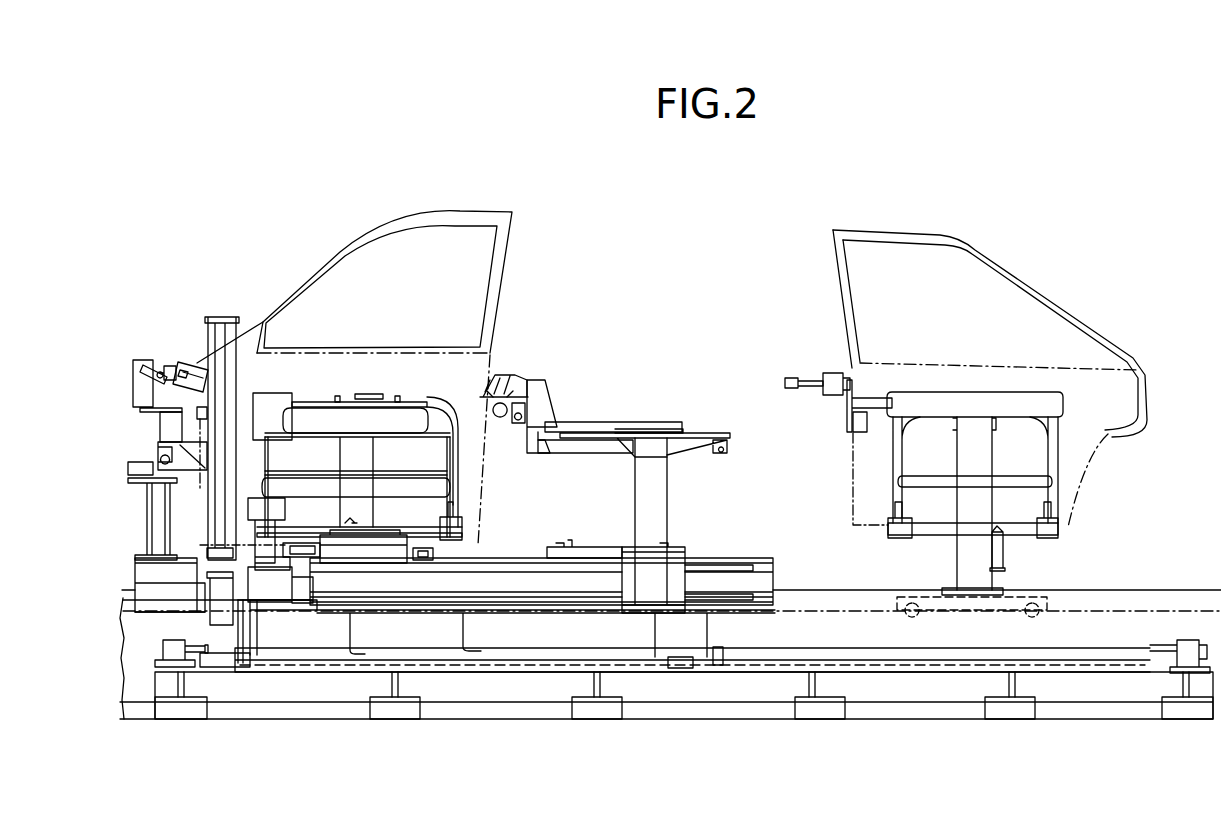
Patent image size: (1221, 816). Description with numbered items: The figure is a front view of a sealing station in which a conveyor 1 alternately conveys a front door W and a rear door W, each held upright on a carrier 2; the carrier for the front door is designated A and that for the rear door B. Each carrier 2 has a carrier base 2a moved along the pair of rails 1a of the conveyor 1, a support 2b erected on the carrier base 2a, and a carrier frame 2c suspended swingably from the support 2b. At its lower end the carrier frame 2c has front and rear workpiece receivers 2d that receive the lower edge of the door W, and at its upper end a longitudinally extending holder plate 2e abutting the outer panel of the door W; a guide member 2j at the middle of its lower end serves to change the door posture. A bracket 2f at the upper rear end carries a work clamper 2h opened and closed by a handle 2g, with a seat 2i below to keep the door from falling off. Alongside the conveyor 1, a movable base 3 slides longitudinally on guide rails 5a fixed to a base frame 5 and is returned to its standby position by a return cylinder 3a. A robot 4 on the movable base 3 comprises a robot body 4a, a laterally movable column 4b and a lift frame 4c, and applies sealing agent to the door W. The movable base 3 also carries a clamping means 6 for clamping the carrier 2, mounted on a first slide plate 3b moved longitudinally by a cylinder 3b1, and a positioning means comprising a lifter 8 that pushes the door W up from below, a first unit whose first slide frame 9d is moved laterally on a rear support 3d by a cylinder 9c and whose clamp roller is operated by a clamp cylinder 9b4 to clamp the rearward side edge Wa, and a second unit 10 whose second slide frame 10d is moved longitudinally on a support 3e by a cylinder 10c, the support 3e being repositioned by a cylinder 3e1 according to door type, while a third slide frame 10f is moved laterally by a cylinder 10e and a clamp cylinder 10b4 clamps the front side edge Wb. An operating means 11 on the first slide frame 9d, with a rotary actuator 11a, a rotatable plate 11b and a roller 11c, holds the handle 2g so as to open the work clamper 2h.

The conveyor 1 is at (817, 585).
The rail 1a is at (1145, 602).
The carrier 2 is at (412, 394).
The carrier base 2a is at (930, 597).
The support 2b is at (365, 460).
The carrier frame 2c is at (456, 447).
The workpiece receiver 2d is at (462, 527).
The holder plate 2e is at (388, 417).
The bracket 2f is at (193, 353).
The handle 2g is at (166, 365).
The work clamper 2h is at (209, 320).
The seat 2i is at (212, 414).
The guide member 2j is at (1002, 554).
The movable base 3 is at (512, 560).
The return cylinder 3a is at (880, 623).
The first slide plate 3b is at (286, 547).
The cylinder 3b1 is at (381, 539).
The support 3d is at (157, 550).
The support 3e is at (660, 518).
The cylinder 3e1 is at (575, 548).
The robot 4 is at (175, 512).
The robot body 4a is at (263, 620).
The laterally movable column 4b is at (240, 625).
The lift frame 4c is at (188, 548).
The base frame 5 is at (458, 690).
The guide rail 5a is at (520, 665).
The clamping means 6 is at (280, 542).
The lifter 8 is at (435, 552).
The clamp cylinder 9b4 is at (162, 440).
The cylinder 9c is at (160, 457).
The first slide frame 9d is at (162, 482).
The second unit 10 is at (539, 383).
The clamp cylinder 10b4 is at (497, 411).
The cylinder 10c is at (704, 445).
The second slide frame 10d is at (590, 422).
The cylinder 10e is at (540, 415).
The third slide frame 10f is at (484, 385).
The operating means 11 is at (138, 355).
The rotary actuator 11a is at (182, 365).
The rotatable plate 11b is at (161, 361).
The roller 11c is at (157, 364).
The carrier for the front door A is at (313, 398).
The carrier for the rear door B is at (1030, 393).
The door W is at (452, 208).
The rearward side edge Wa is at (198, 358).
The front side edge Wb is at (502, 296).